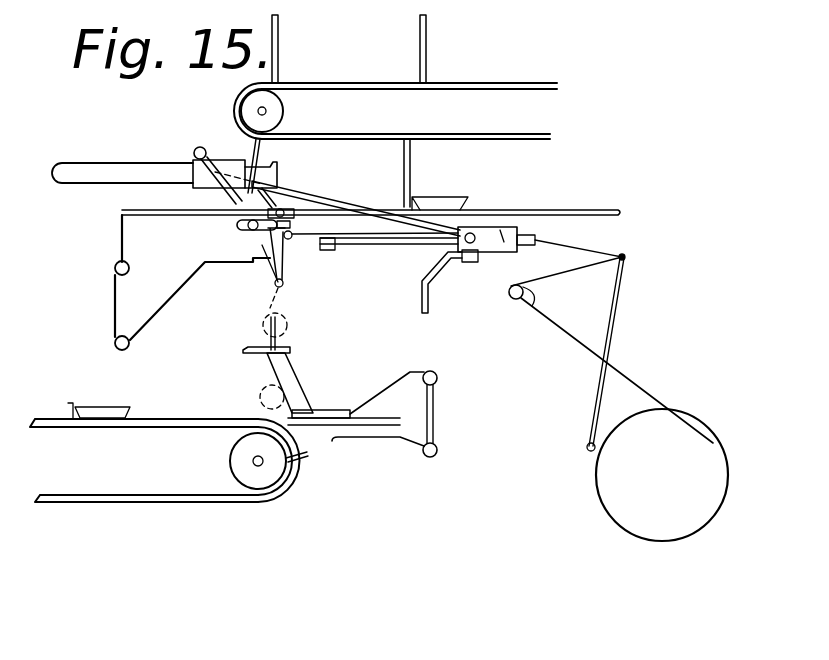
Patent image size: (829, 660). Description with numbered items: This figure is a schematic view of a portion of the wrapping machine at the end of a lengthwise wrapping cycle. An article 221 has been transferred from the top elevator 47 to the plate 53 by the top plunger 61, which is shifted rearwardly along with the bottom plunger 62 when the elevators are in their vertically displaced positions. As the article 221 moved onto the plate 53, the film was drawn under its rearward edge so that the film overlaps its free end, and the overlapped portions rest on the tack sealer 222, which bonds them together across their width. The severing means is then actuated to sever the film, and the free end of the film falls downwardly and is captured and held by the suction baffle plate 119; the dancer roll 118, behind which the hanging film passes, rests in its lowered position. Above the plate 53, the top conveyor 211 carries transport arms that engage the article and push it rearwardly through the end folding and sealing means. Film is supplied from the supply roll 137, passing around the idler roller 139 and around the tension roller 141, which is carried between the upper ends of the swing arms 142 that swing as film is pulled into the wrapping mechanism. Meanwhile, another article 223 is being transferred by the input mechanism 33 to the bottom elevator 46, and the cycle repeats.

The top conveyor 211 is at (232, 100).
The article 221 is at (298, 195).
The plate 53 is at (555, 208).
The top elevator 47 is at (122, 238).
The top plunger 61 is at (238, 198).
The tack sealer 222 is at (292, 230).
The dancer roll 118 is at (283, 280).
The bottom plunger 62 is at (428, 296).
The suction baffle plate 119 is at (240, 356).
The article 223 is at (322, 410).
The bottom elevator 46 is at (418, 411).
The input mechanism 33 is at (296, 495).
The tension roller 141 is at (624, 257).
The swing arms 142 is at (610, 320).
The idler roller 139 is at (533, 316).
The supply roll 137 is at (615, 497).